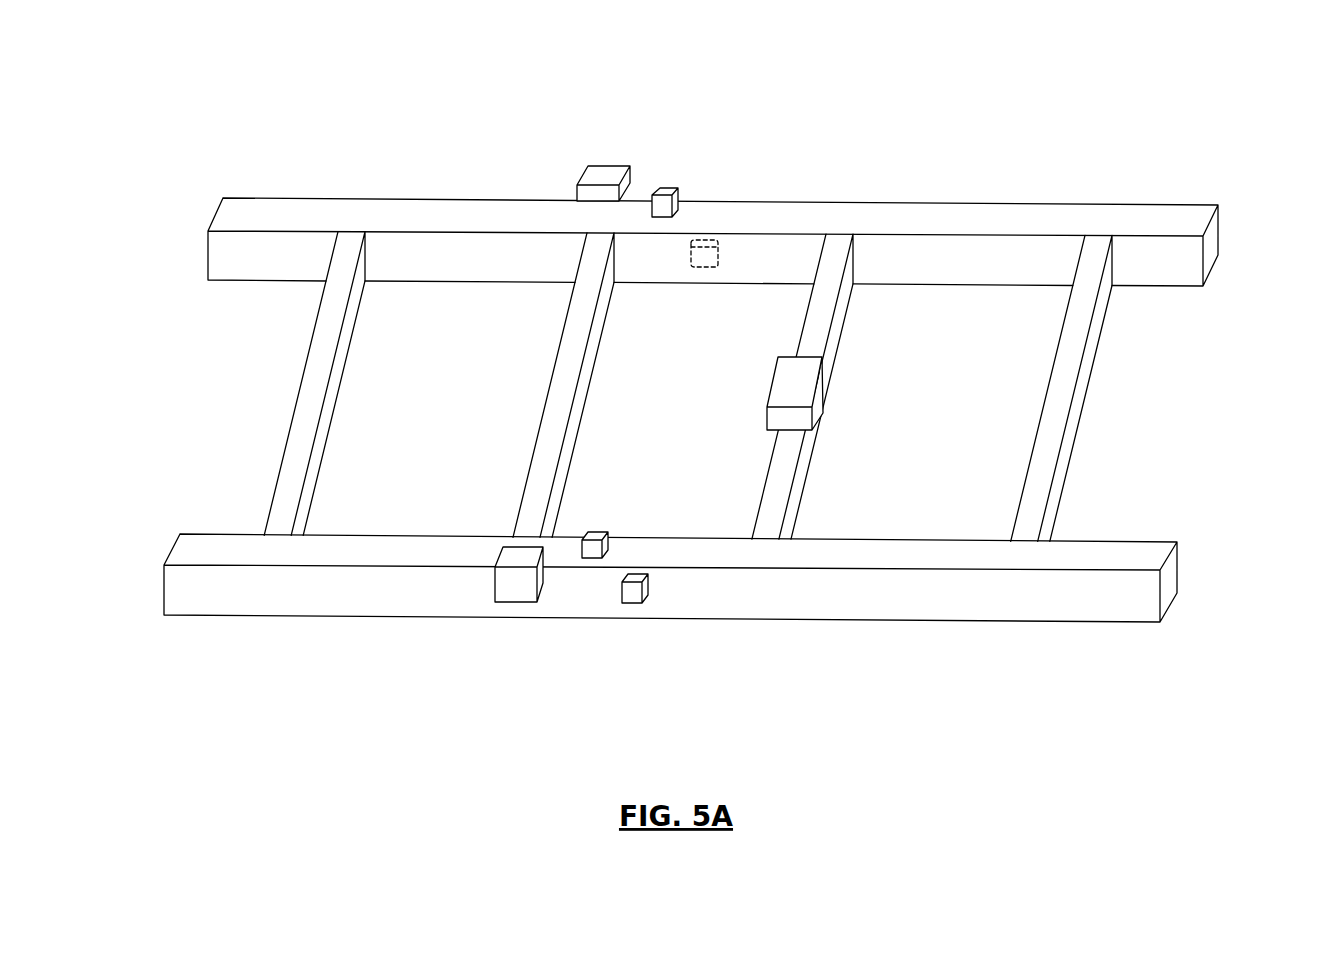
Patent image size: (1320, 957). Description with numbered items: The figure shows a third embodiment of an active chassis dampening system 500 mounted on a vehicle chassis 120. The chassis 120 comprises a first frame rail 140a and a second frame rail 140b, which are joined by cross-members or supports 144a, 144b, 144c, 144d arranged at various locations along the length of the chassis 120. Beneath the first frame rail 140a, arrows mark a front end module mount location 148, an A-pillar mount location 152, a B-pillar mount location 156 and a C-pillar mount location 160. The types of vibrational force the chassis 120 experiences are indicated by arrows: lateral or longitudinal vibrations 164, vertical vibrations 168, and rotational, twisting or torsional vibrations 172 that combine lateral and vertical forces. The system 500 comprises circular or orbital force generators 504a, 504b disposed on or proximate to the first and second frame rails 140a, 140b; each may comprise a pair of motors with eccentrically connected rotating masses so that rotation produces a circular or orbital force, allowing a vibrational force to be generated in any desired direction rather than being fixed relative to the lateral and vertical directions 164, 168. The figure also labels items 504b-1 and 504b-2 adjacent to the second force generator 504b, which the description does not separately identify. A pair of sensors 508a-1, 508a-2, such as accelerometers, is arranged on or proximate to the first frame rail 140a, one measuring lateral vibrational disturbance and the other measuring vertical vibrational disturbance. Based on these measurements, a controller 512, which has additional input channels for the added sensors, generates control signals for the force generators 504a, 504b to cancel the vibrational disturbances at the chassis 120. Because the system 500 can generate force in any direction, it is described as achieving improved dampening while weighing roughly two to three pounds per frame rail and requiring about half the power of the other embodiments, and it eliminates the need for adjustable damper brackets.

The chassis 120 is at (199, 113).
The third embodiment of the active chassis dampening system 500 is at (865, 109).
The first frame rail 140a is at (946, 537).
The second frame rail 140b is at (443, 199).
The cross-member 144a is at (297, 392).
The cross-member 144b is at (547, 393).
The cross-member 144c is at (802, 493).
The cross-member 144d is at (1042, 397).
The front end module mount location 148 is at (220, 625).
The A-pillar mount location 152 is at (415, 626).
The B-pillar mount location 156 is at (660, 628).
The C-pillar mount location 160 is at (908, 630).
The lateral or longitudinal vibration arrows 164 is at (1305, 587).
The vertical vibration arrows 168 is at (129, 532).
The rotational vibration arrows 172 is at (1178, 298).
The first circular or orbital force generator 504a is at (518, 602).
The second circular or orbital force generator 504b is at (580, 185).
The sensor element 504b-1 is at (668, 188).
The alternative sensor location 504b-2 is at (703, 240).
The first sensor of first sensor pair 508a-1 is at (592, 532).
The second sensor of first sensor pair 508a-2 is at (632, 574).
The controller 512 is at (773, 385).